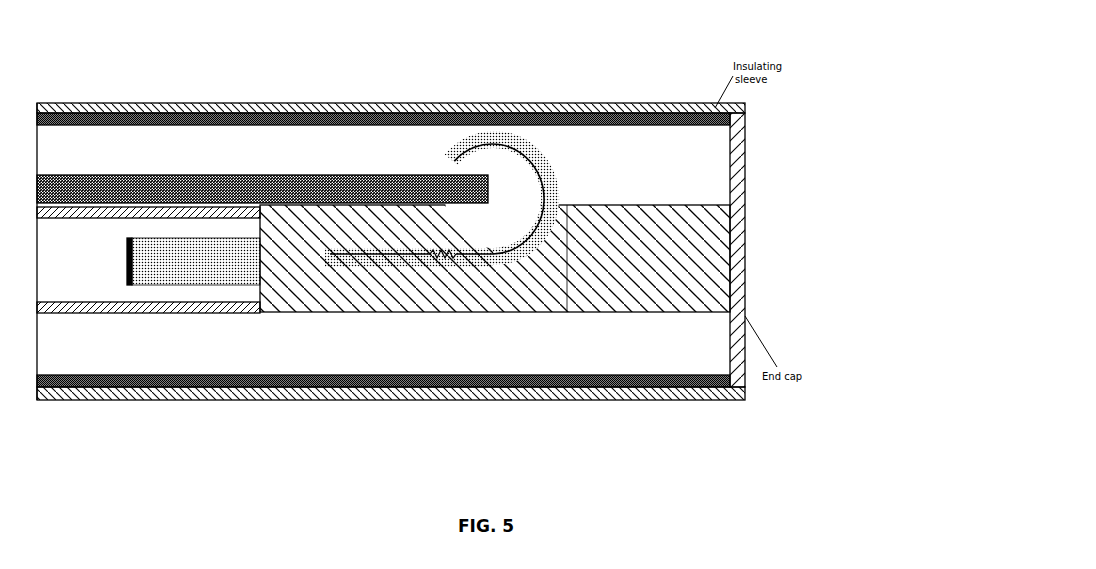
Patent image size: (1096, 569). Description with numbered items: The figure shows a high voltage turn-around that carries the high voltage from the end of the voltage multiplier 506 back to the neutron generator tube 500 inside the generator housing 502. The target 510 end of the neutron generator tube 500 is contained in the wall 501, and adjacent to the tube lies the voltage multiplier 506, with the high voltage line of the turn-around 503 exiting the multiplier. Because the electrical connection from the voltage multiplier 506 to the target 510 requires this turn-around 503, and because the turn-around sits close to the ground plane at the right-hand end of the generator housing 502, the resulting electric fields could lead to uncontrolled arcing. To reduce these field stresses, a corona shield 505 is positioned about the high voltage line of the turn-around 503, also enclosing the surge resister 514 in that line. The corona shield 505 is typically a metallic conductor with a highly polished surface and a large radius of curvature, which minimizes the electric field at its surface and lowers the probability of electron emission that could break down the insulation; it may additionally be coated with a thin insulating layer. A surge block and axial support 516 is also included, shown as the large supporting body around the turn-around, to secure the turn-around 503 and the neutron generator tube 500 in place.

The neutron generator tube 500 is at (85, 283).
The wall 501 is at (243, 305).
The generator housing 502 is at (687, 113).
The turn-around 503 is at (438, 158).
The corona shield 505 is at (533, 140).
The voltage multiplier 506 is at (204, 178).
The target 510 is at (129, 238).
The surge resister 514 is at (432, 247).
The surge block and axial support 516 is at (421, 205).